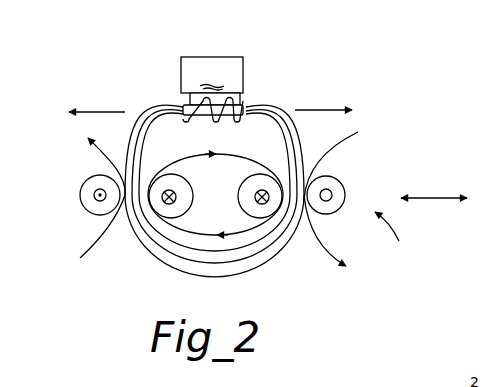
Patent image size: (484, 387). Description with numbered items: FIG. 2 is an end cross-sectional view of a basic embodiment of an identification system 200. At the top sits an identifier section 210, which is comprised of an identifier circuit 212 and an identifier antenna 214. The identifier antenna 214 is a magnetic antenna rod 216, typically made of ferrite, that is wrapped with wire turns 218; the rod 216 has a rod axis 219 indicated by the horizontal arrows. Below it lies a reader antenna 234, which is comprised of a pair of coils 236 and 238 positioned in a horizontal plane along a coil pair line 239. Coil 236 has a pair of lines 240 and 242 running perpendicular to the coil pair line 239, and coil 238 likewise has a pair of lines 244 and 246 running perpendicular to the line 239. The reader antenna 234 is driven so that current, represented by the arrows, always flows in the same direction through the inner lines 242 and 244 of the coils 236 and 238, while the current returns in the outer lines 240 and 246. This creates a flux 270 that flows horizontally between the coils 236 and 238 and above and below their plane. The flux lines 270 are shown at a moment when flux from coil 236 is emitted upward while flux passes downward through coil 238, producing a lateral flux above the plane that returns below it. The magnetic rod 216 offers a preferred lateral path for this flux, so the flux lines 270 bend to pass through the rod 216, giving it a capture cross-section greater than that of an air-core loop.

The identification system 200 is at (113, 291).
The identifier section 210 is at (180, 63).
The identifier circuit 212 is at (216, 77).
The identifier antenna 214 is at (215, 182).
The magnetic antenna rod 216 is at (244, 100).
The wire turns 218 is at (184, 99).
The rod axis 219 is at (107, 112).
The reader antenna 234 is at (403, 239).
The coil 236 is at (100, 203).
The coil 238 is at (325, 203).
The coil pair line 239 is at (435, 199).
The line 240 is at (98, 194).
The line 242 is at (168, 199).
The line 244 is at (263, 199).
The line 246 is at (331, 197).
The flux 270 is at (302, 149).